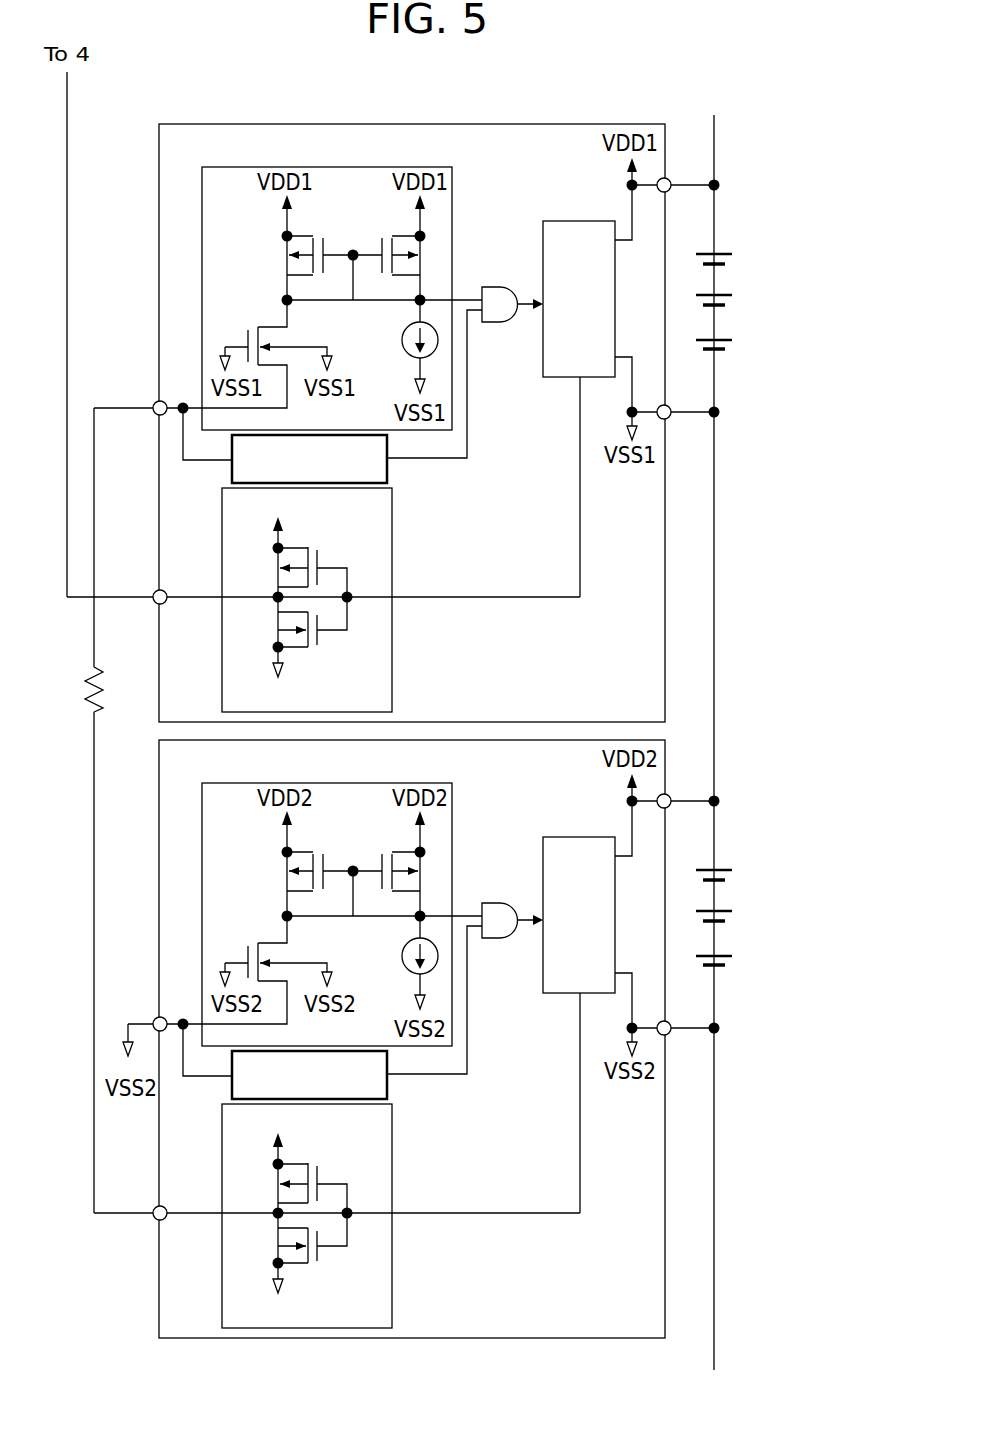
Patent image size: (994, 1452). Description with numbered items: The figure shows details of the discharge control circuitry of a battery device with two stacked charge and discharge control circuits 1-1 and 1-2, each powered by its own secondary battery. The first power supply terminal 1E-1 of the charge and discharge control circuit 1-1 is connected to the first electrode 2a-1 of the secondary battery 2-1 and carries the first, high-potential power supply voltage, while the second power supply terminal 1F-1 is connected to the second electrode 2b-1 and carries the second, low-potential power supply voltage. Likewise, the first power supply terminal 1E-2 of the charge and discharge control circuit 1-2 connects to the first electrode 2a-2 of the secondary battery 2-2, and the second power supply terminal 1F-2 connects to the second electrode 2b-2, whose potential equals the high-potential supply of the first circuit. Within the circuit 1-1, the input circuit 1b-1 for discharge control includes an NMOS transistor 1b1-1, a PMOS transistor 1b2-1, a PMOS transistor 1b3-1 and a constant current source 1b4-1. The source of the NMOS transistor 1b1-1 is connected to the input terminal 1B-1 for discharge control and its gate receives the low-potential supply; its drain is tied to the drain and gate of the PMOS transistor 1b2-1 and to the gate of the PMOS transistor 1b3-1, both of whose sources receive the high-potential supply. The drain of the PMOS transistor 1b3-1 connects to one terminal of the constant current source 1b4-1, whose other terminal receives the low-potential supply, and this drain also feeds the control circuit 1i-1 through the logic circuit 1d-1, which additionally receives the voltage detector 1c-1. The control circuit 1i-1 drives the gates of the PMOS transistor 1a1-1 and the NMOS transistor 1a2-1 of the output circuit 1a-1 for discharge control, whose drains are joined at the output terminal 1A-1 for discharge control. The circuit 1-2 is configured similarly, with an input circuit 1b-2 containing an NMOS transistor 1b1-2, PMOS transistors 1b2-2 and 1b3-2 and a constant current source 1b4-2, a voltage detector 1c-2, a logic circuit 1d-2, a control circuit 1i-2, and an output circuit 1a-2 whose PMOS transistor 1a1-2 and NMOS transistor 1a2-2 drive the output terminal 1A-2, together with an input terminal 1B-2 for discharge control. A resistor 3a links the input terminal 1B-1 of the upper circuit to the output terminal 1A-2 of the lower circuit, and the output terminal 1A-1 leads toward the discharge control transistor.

The charge and discharge control circuit 1-1 is at (159, 304).
The charge and discharge control circuit 1-2 is at (159, 920).
The output terminal for discharge control 1A-1 is at (155, 590).
The output terminal for discharge control 1A-2 is at (155, 1206).
The input terminal for discharge control 1B-1 is at (155, 402).
The input terminal for discharge control 1B-2 is at (155, 1018).
The first power supply terminal 1E-1 is at (667, 191).
The first power supply terminal 1E-2 is at (667, 807).
The second power supply terminal 1F-1 is at (667, 405).
The second power supply terminal 1F-2 is at (667, 1021).
The output circuit for discharge control 1a-1 is at (392, 675).
The output circuit for discharge control 1a-2 is at (392, 1291).
The PMOS transistor 1a1-1 is at (318, 558).
The NMOS transistor 1a2-1 is at (318, 638).
The PMOS transistor 1a1-2 is at (312, 1204).
The NMOS transistor 1a2-2 is at (297, 1245).
The input circuit for discharge control 1b-1 is at (452, 185).
The input circuit for discharge control 1b-2 is at (452, 801).
The NMOS transistor 1b1-1 is at (267, 323).
The PMOS transistor 1b2-1 is at (286, 248).
The PMOS transistor 1b3-1 is at (407, 235).
The constant current source 1b4-1 is at (403, 337).
The NMOS transistor 1b1-2 is at (276, 964).
The PMOS transistor 1b2-2 is at (305, 871).
The PMOS transistor 1b3-2 is at (371, 884).
The constant current source 1b4-2 is at (420, 956).
The voltage detector 1c-1 is at (387, 470).
The voltage detector 1c-2 is at (387, 1086).
The logic circuit 1d-1 is at (503, 323).
The logic circuit 1d-2 is at (503, 939).
The control circuit 1i-1 is at (543, 257).
The control circuit 1i-2 is at (543, 873).
The secondary battery 2-1 is at (754, 306).
The secondary battery 2-2 is at (754, 922).
The first electrode 2a-1 is at (720, 247).
The first electrode 2a-2 is at (720, 863).
The second electrode 2b-1 is at (720, 347).
The second electrode 2b-2 is at (720, 963).
The resistor 3a is at (88, 692).